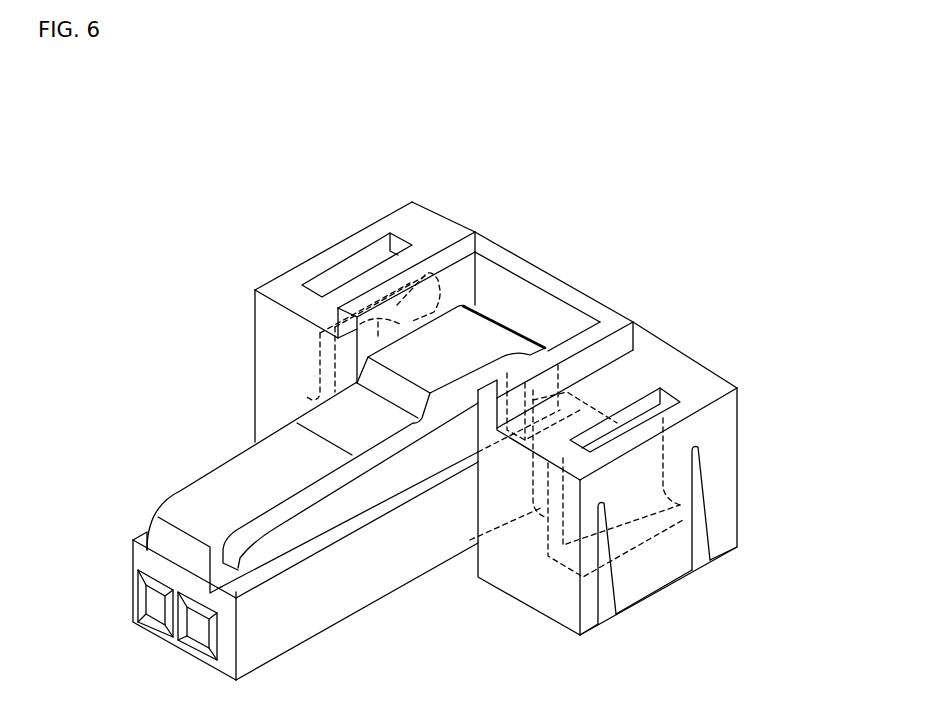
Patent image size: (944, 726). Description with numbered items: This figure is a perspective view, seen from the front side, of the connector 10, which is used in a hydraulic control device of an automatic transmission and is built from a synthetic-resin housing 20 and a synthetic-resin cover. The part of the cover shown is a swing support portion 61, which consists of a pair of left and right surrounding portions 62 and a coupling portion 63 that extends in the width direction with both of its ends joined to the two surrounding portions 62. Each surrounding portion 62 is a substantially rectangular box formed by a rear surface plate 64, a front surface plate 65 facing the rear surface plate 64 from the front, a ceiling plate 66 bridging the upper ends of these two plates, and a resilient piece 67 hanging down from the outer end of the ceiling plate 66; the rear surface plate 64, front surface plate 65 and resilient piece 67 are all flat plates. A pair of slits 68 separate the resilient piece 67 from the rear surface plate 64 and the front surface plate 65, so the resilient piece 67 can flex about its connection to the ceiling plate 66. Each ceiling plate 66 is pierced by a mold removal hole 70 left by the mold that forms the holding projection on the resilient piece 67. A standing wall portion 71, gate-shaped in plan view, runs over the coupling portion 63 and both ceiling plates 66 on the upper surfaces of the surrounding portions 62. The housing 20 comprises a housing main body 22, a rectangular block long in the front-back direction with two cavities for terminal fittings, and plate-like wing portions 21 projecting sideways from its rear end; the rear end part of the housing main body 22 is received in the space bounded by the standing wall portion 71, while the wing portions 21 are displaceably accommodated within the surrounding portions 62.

The connector 10 is at (583, 124).
The housing 20 is at (135, 540).
The wing portion 21 is at (320, 357).
The housing main body 22 is at (320, 612).
The swing support portion 61 is at (412, 200).
The surrounding portion 62 is at (437, 213).
The coupling portion 63 is at (568, 281).
The rear surface plate 64 is at (743, 453).
The front surface plate 65 is at (265, 362).
The ceiling plate 66 is at (287, 291).
The resilient piece 67 is at (666, 572).
The slit 68 is at (603, 624).
The mold removal hole 70 is at (357, 270).
The standing wall portion 71 is at (527, 264).